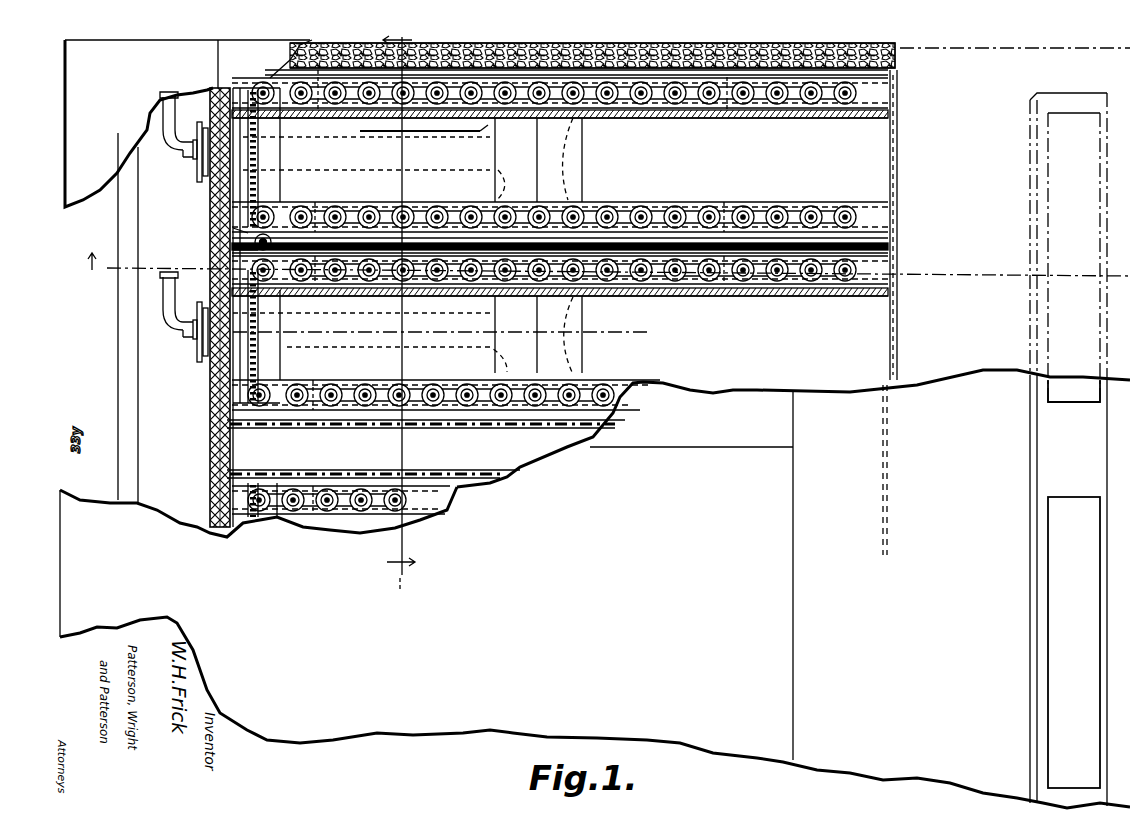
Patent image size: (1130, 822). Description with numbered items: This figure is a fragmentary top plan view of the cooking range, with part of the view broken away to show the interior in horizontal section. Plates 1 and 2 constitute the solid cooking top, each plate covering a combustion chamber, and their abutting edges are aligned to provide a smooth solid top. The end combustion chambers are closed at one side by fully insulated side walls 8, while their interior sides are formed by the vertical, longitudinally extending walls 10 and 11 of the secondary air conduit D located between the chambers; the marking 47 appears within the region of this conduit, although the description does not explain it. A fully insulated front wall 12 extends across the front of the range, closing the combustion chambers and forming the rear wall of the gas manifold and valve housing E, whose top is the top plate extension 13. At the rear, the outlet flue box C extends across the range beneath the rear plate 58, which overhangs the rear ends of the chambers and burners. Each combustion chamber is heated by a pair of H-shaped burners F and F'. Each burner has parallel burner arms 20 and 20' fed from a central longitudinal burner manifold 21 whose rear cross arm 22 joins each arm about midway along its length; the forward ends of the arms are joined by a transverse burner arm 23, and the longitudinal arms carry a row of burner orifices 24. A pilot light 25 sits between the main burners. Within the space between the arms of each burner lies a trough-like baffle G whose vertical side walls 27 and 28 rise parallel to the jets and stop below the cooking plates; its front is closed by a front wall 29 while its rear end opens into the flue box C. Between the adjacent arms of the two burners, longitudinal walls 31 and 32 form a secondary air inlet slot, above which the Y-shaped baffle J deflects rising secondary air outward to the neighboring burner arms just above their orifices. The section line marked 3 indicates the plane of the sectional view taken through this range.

The cooking top plate 1 is at (216, 70).
The cooking top plate 2 is at (598, 399).
The section line 3 is at (399, 326).
The insulated side wall 8 is at (897, 62).
The wall of secondary air conduit 10 is at (123, 303).
The wall of secondary air conduit 11 is at (500, 480).
The insulated front wall 12 is at (210, 203).
The top plate extension 13 is at (595, 424).
The burner arm 20 is at (560, 107).
The burner arm 20' is at (560, 200).
The burner manifold 21 is at (268, 150).
The cross arm 22 is at (440, 129).
The transverse burner arm 23 is at (232, 130).
The burner orifices 24 is at (268, 88).
The pilot light 25 is at (253, 240).
The baffle side wall 27 is at (657, 333).
The baffle side wall 28 is at (735, 202).
The baffle front wall 29 is at (282, 152).
The slot wall 31 is at (233, 233).
The slot wall 32 is at (248, 249).
The brace 47 is at (353, 467).
The rear plate 58 is at (849, 659).
The outlet flue box C is at (1043, 449).
The secondary air conduit D is at (469, 444).
The valve housing E is at (165, 379).
The burner F is at (518, 171).
The burner F' is at (517, 307).
The trough-like baffle G is at (525, 245).
The Y-shaped baffle J is at (897, 248).